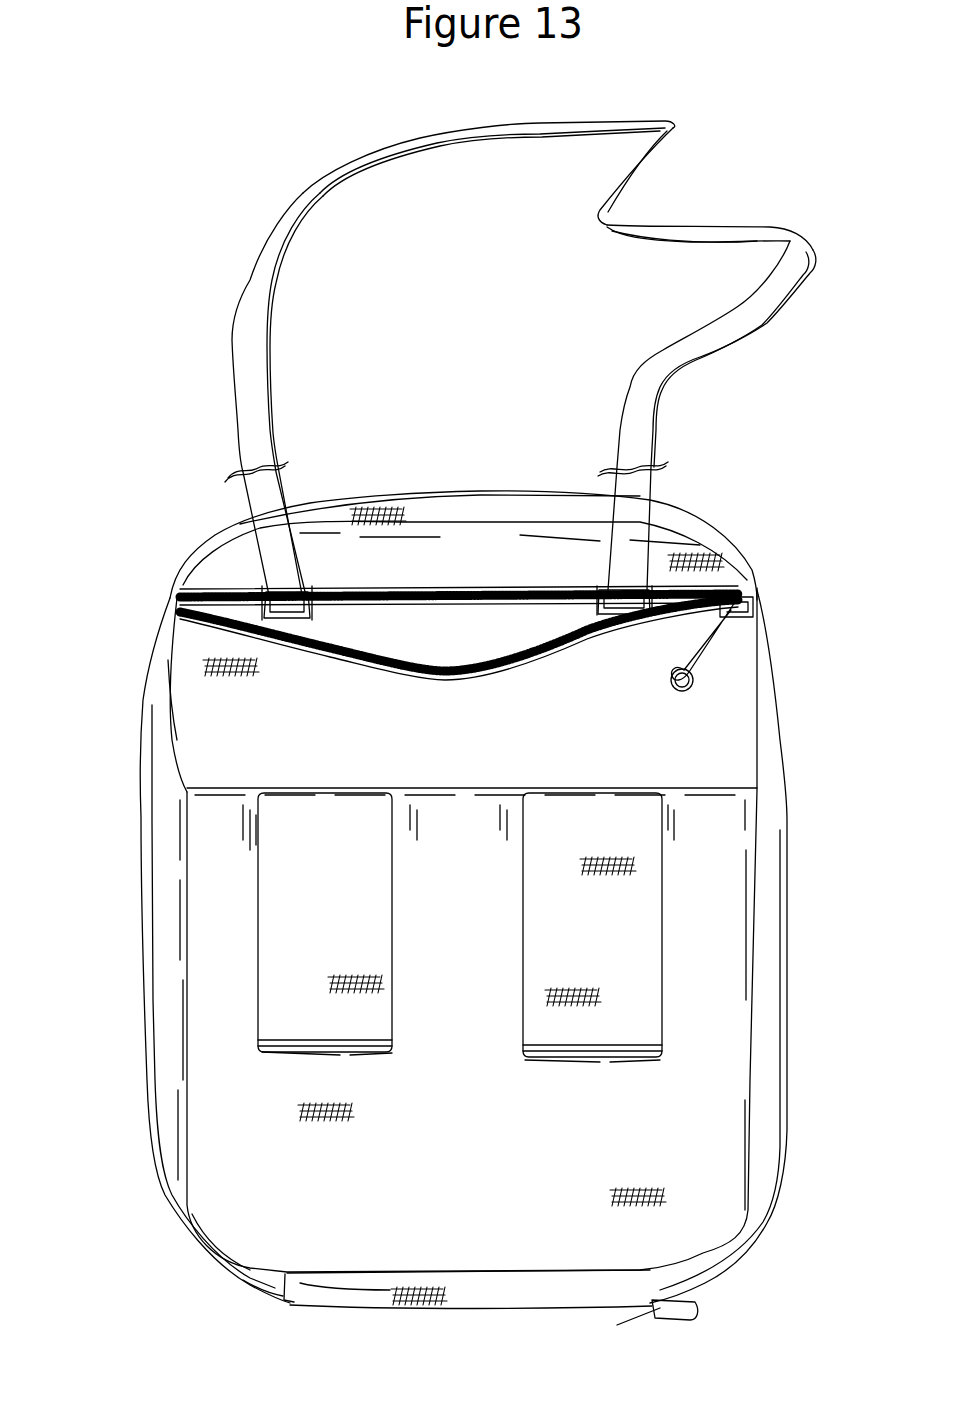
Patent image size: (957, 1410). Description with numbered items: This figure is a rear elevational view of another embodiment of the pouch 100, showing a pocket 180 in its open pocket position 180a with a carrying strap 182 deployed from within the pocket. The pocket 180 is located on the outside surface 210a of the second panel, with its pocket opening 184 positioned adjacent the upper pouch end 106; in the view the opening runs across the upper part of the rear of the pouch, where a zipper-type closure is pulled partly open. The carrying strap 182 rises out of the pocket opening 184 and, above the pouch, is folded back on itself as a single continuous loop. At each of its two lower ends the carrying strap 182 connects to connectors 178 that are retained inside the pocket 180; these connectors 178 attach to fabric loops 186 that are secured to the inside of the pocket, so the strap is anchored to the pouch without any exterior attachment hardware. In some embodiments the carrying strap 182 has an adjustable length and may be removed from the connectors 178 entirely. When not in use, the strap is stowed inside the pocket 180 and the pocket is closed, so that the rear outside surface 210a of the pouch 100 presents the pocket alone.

The pouch 100 is at (757, 490).
The upper pouch end 106 is at (223, 523).
The connectors 178 is at (320, 582).
The pocket 180 is at (690, 727).
The open pocket position 180a is at (433, 662).
The carrying strap 182 is at (257, 368).
The pocket opening 184 is at (222, 597).
The fabric loops 186 is at (293, 620).
The outside surface 210a is at (218, 822).